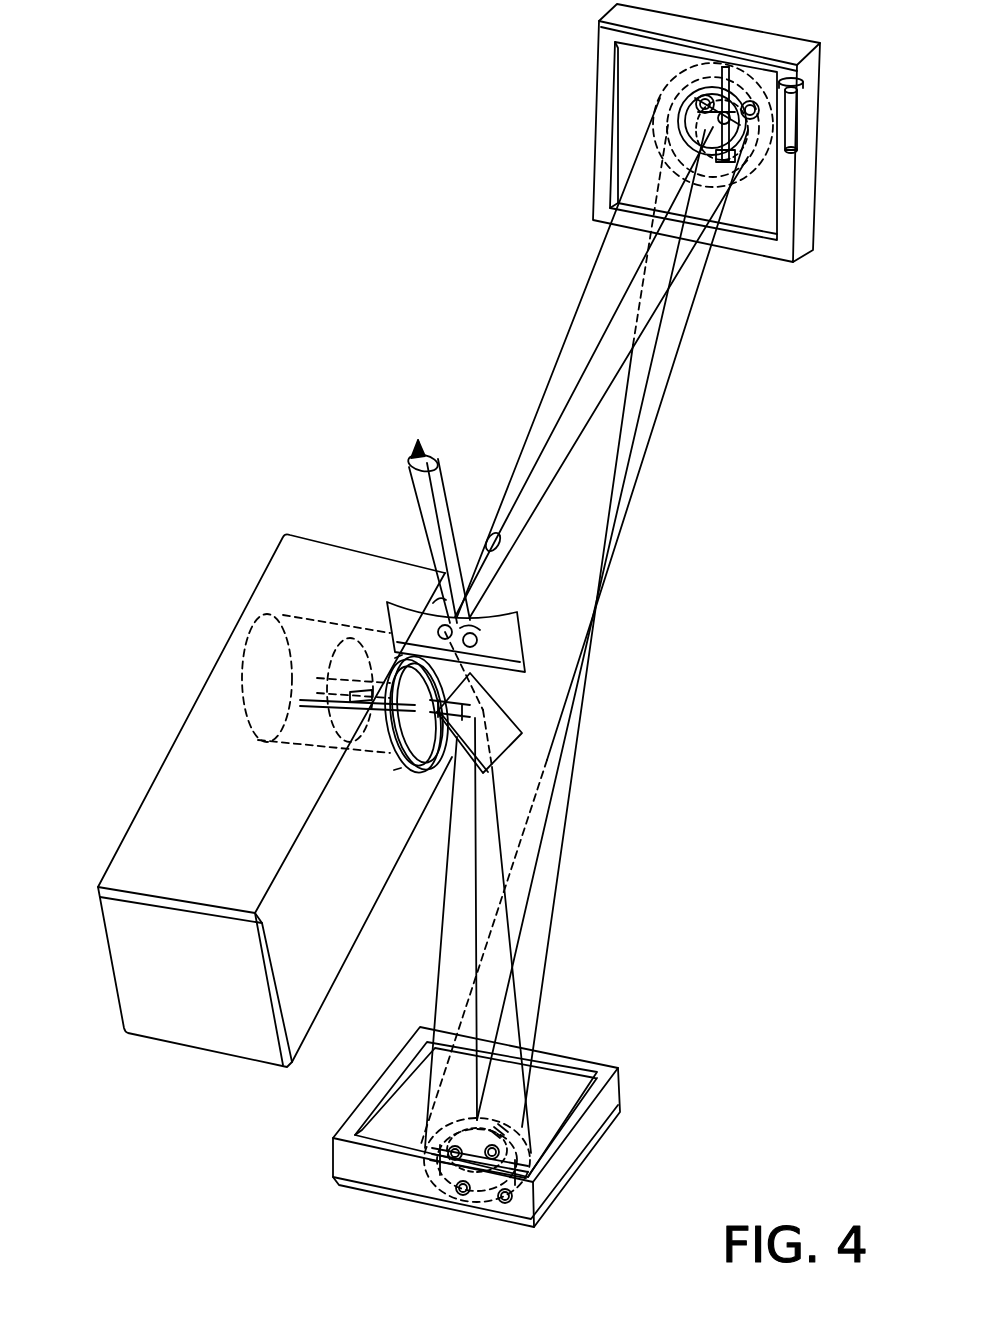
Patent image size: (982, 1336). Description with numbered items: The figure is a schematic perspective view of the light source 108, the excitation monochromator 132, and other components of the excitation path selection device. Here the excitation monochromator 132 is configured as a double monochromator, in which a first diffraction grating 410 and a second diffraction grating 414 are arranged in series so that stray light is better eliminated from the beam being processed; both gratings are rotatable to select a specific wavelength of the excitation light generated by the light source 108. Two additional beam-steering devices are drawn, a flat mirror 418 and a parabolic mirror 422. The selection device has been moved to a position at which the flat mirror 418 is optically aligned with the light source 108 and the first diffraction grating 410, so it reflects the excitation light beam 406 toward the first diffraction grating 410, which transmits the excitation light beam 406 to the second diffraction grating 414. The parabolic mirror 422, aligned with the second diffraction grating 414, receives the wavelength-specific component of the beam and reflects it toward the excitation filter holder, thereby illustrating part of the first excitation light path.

The excitation monochromator 132 is at (468, 138).
The second diffraction grating 414 is at (773, 263).
The first diffraction grating 410 is at (620, 1094).
The light source 108 is at (145, 797).
The excitation light beam 406 is at (575, 730).
The parabolic mirror 422 is at (517, 650).
The flat mirror 418 is at (488, 770).